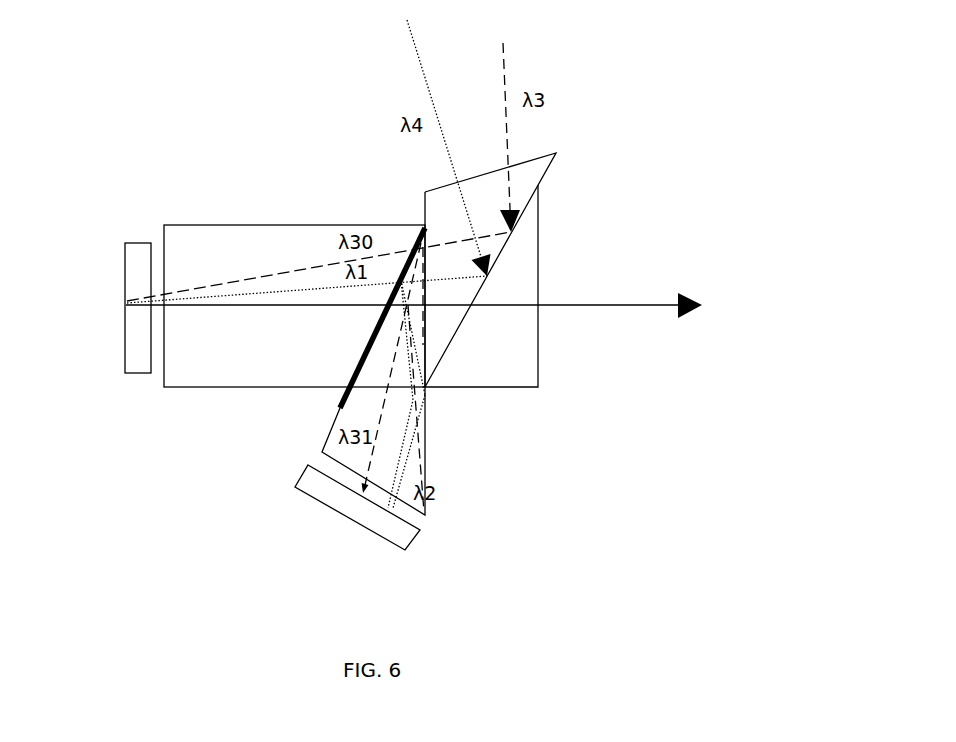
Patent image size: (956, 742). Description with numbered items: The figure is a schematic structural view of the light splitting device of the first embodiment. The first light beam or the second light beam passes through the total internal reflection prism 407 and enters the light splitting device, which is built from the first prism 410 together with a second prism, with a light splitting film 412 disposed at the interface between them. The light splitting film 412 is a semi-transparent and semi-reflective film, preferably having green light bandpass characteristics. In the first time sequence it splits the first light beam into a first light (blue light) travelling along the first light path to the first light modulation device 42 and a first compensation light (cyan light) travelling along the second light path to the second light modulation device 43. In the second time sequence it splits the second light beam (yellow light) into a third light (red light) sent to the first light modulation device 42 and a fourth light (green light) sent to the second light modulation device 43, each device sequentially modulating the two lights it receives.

The first prism 410 is at (282, 225).
The first light modulation device 42 is at (139, 367).
The total internal reflection (TIR) prism 407 is at (544, 167).
The light splitting film 412 is at (337, 410).
The second light modulation device 43 is at (365, 522).